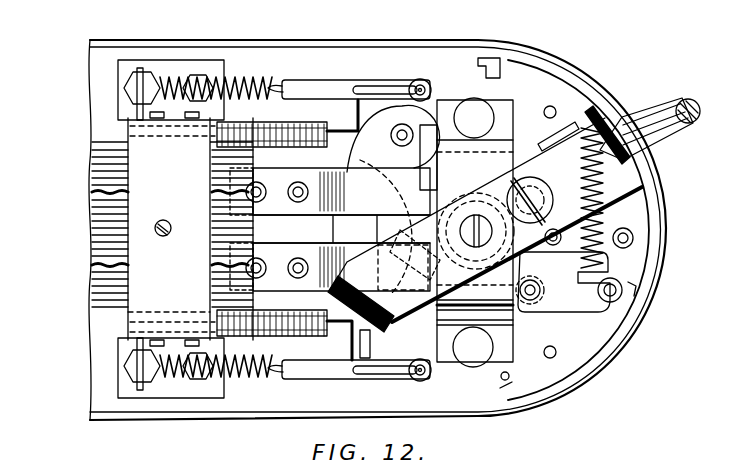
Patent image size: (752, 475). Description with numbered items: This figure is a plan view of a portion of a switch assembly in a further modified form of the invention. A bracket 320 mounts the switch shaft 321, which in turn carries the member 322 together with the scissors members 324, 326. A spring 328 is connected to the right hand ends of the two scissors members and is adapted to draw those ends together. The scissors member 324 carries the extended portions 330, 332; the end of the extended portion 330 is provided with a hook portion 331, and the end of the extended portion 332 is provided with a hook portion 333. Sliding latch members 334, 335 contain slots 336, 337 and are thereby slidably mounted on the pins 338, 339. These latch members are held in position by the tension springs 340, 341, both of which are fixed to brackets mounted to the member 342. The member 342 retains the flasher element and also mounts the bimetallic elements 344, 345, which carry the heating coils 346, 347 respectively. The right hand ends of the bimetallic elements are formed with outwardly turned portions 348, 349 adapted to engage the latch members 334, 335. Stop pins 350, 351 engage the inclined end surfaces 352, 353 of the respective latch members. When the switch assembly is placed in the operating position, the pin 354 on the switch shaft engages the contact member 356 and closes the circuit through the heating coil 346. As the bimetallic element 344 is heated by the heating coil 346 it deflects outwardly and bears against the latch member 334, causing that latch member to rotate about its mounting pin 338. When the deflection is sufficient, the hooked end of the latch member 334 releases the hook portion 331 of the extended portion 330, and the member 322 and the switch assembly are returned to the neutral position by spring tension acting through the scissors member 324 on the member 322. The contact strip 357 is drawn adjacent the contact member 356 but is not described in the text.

The bracket 320 is at (516, 128).
The switch shaft 321 is at (464, 290).
The member 322 is at (570, 182).
The scissors member 324 is at (514, 150).
The scissors member 326 is at (584, 258).
The spring 328 is at (561, 238).
The extended portion 330 is at (552, 83).
The hook portion 331 is at (471, 58).
The extended portion 332 is at (636, 290).
The hook portion 333 is at (612, 312).
The sliding latch member 334 is at (352, 75).
The sliding latch member 335 is at (365, 384).
The slot 336 is at (386, 86).
The slot 337 is at (400, 374).
The pin 338 is at (420, 80).
The pin 339 is at (421, 381).
The tension spring 340 is at (228, 80).
The tension spring 341 is at (232, 380).
The member 342 is at (170, 290).
The bimetallic element 344 is at (98, 215).
The bimetallic element 345 is at (344, 330).
The heating coil 346 is at (284, 122).
The heating coil 347 is at (283, 338).
The outwardly turned portion 348 is at (380, 128).
The outwardly turned portion 349 is at (362, 340).
The stop pin 350 is at (535, 60).
The stop pin 351 is at (509, 378).
The inclined end surface 352 is at (500, 76).
The inclined end surface 353 is at (506, 387).
The pin 354 is at (396, 296).
The contact member 356 is at (343, 267).
The contact strip 357 is at (362, 206).